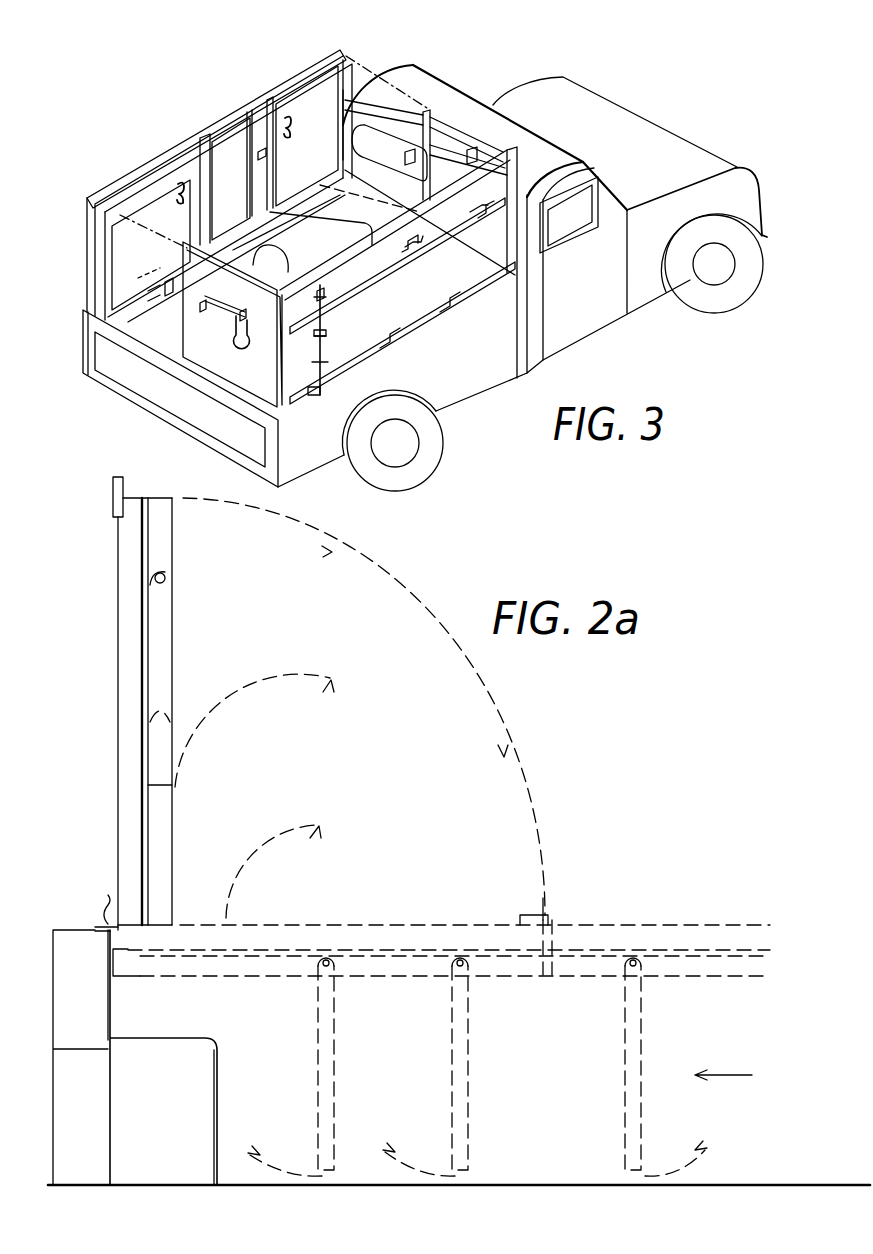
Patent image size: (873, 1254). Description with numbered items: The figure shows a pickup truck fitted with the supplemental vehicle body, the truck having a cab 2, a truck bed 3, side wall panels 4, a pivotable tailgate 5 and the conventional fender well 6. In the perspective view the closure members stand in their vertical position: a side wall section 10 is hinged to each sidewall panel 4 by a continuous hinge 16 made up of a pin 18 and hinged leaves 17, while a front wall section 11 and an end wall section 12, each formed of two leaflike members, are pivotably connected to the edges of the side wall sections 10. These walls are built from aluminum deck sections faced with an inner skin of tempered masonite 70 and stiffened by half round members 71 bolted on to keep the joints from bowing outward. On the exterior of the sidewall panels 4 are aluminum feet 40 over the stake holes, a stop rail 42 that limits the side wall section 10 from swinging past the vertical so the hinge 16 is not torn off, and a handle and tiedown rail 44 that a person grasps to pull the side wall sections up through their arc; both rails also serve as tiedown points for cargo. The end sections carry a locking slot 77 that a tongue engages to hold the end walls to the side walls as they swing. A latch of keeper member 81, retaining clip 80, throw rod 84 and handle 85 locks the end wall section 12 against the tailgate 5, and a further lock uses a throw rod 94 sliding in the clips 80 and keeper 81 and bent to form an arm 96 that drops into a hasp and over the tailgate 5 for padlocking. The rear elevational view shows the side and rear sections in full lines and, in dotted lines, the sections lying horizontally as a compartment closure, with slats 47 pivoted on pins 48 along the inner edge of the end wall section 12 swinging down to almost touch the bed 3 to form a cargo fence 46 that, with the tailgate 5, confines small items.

In FIG. 3, the cab 2 is at (541, 169).
In FIG. 2a, the truck bed 3 is at (498, 1187).
In FIG. 3, the side wall panels 4 is at (469, 366).
In FIG. 2a, the side wall panels 4 is at (70, 966).
In FIG. 3, the pivotable tailgate 5 is at (187, 404).
In FIG. 3, the fender well 6 is at (270, 263).
In FIG. 2a, the fender well 6 is at (160, 1118).
In FIG. 3, the side wall section 10 is at (215, 128).
In FIG. 3, the front wall section 11 is at (355, 58).
In FIG. 3, the end wall section 12 is at (257, 380).
In FIG. 2a, the end wall section 12 is at (160, 512).
In FIG. 2a, the continuous hinge 16 is at (73, 892).
In FIG. 2a, the hinged leaves 17 is at (95, 925).
In FIG. 2a, the pin 18 is at (95, 899).
In FIG. 3, the aluminum feet 40 is at (415, 243).
In FIG. 3, the stop rail 42 is at (455, 298).
In FIG. 3, the handle and tiedown rail 44 is at (462, 232).
In FIG. 2a, the cargo fence 46 is at (739, 1077).
In FIG. 2a, the slats 47 is at (165, 675).
In FIG. 2a, the pivot pin 48 is at (168, 576).
In FIG. 3, the tempered masonite inner skin 70 is at (232, 145).
In FIG. 3, the stiffening half round members 71 is at (272, 104).
In FIG. 3, the locking slot 77 is at (505, 160).
In FIG. 3, the retaining clip 80 is at (326, 297).
In FIG. 3, the keeper member 81 is at (170, 284).
In FIG. 3, the throw rod 84 is at (210, 305).
In FIG. 3, the handle 85 is at (237, 347).
In FIG. 3, the throw rod 94 is at (328, 338).
In FIG. 3, the arm 96 is at (321, 396).